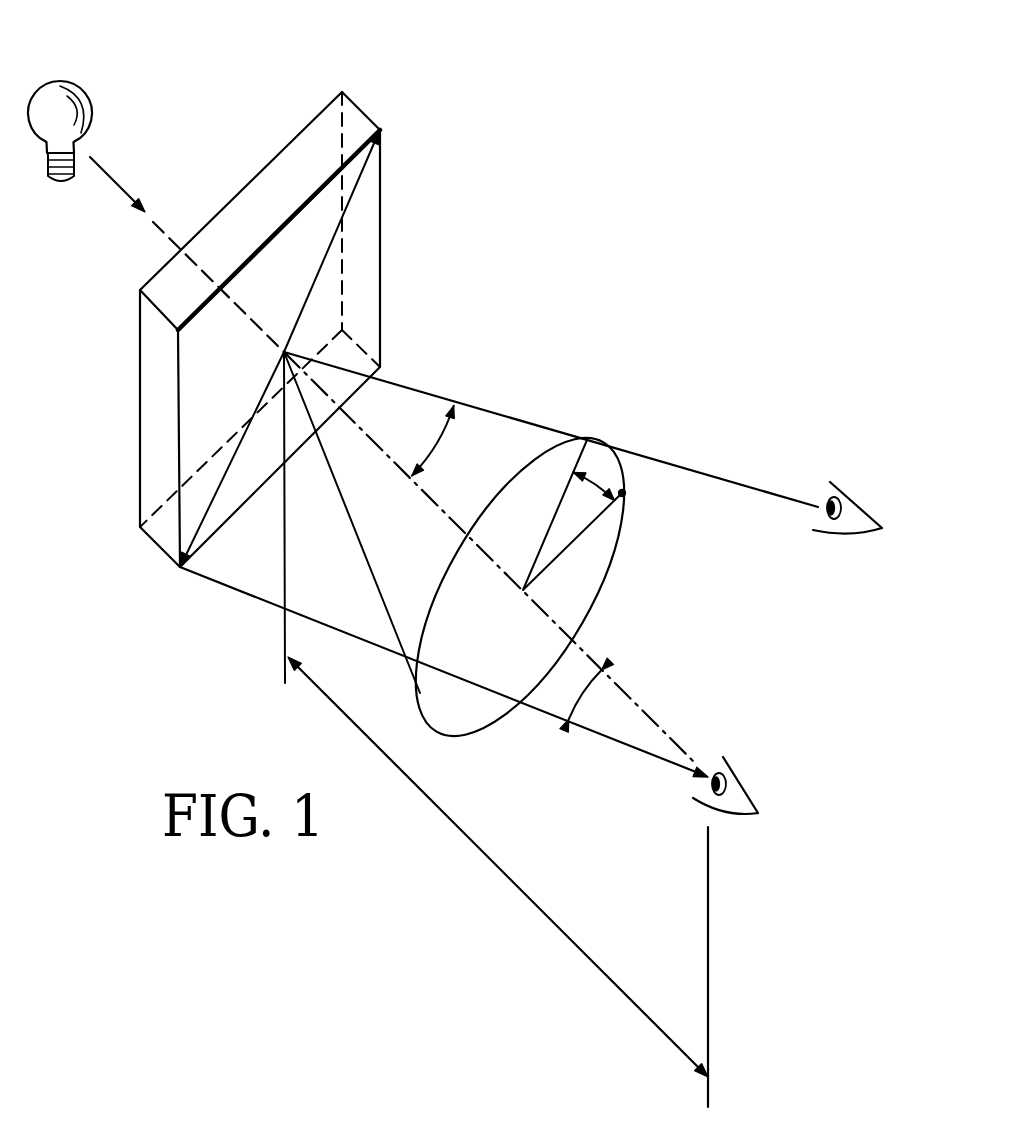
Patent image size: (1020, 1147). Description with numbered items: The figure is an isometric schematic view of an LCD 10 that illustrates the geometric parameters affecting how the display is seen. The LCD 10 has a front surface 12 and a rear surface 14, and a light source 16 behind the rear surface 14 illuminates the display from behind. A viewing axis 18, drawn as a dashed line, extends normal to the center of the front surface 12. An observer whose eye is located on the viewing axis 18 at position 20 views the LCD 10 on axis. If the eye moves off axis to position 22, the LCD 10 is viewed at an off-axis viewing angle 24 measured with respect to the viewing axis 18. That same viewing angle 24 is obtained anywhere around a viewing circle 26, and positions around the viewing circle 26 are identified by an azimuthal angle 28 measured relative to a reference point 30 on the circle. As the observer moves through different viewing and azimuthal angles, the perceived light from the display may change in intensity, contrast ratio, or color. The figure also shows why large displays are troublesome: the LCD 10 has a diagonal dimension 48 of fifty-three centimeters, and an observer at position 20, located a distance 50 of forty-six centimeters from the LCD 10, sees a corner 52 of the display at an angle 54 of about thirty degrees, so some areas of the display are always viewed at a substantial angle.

The LCD 10 is at (300, 291).
The front surface 12 is at (367, 193).
The rear surface 14 is at (305, 126).
The light source 16 is at (56, 79).
The viewing axis 18 is at (668, 737).
The position 20 is at (747, 790).
The position 22 is at (862, 507).
The viewing angle 24 is at (438, 440).
The viewing circle 26 is at (615, 567).
The azimuthal angle 28 is at (628, 465).
The reference point 30 is at (627, 493).
The diagonal dimension 48 is at (322, 267).
The distance 50 is at (493, 866).
The corner 52 is at (180, 572).
The angle 54 is at (622, 694).